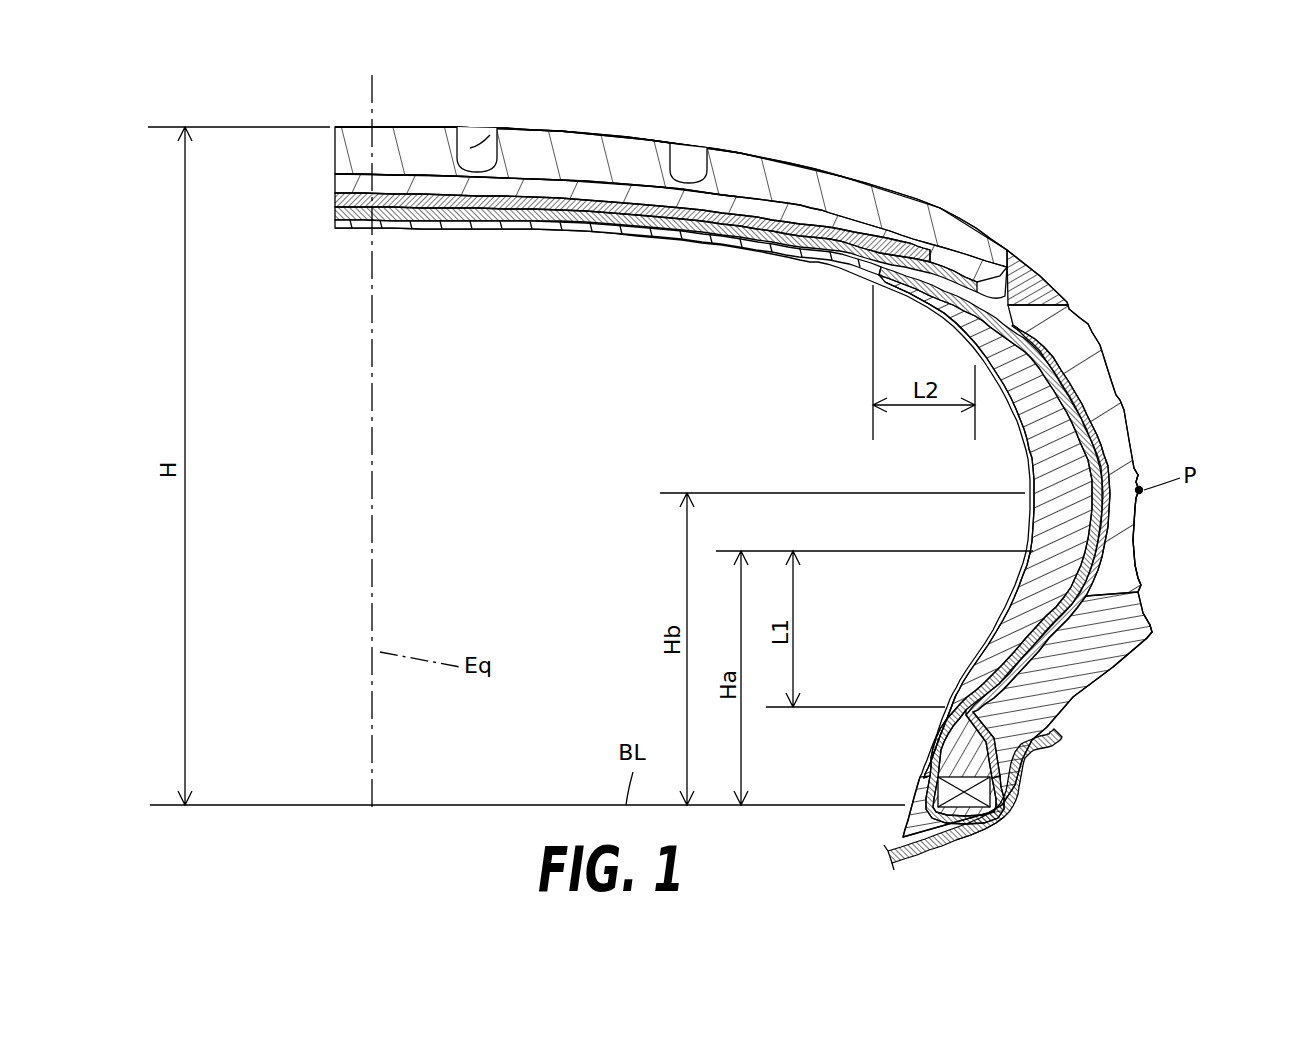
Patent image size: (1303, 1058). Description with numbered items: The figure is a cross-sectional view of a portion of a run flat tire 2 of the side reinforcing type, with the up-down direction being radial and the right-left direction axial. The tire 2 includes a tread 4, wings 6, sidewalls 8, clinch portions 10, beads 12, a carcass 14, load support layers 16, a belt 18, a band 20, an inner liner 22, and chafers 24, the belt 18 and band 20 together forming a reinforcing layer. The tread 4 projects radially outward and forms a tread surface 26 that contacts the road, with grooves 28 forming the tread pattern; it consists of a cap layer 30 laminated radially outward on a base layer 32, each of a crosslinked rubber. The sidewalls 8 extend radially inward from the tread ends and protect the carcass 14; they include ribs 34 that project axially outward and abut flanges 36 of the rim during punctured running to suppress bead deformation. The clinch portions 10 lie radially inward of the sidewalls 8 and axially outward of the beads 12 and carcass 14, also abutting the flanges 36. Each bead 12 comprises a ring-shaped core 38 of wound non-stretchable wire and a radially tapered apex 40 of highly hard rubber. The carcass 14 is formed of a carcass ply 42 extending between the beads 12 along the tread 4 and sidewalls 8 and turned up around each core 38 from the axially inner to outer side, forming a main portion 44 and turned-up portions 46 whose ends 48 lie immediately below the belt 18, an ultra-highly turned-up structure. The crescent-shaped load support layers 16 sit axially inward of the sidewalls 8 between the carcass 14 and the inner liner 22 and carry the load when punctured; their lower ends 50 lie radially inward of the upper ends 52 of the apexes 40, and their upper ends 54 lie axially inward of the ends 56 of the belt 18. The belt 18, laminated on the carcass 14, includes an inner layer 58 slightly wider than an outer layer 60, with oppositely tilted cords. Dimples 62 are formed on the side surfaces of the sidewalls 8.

The run flat tire 2 is at (783, 478).
The tread 4 is at (832, 162).
The wings 6 is at (1030, 285).
The sidewalls 8 is at (1112, 385).
The clinch portions 10 is at (1040, 693).
The beads 12 is at (882, 763).
The carcass 14 is at (797, 522).
The load support layers 16 is at (1060, 523).
The belt 18 is at (594, 231).
The band 20 is at (420, 190).
The inner liner 22 is at (508, 230).
The chafers 24 is at (1003, 766).
The tread surface 26 is at (732, 150).
The grooves 28 is at (478, 150).
The cap layer 30 is at (555, 155).
The base layer 32 is at (628, 192).
The ribs 34 is at (1135, 627).
The flanges 36 is at (1020, 800).
The core 38 is at (930, 790).
The apex 40 is at (930, 738).
The carcass ply 42 is at (797, 522).
The main portion 44 is at (1090, 445).
The turned-up portions 46 is at (1112, 415).
The ends of the turned-up portions 48 is at (773, 255).
The lower ends of the support layers 50 is at (948, 700).
The upper ends of the apexes 52 is at (1122, 530).
The upper ends of the support layers 54 is at (870, 278).
The ends of the belt 56 is at (985, 280).
The inner layer 58 is at (335, 215).
The outer layer 60 is at (335, 196).
The dimples 62 is at (1138, 470).